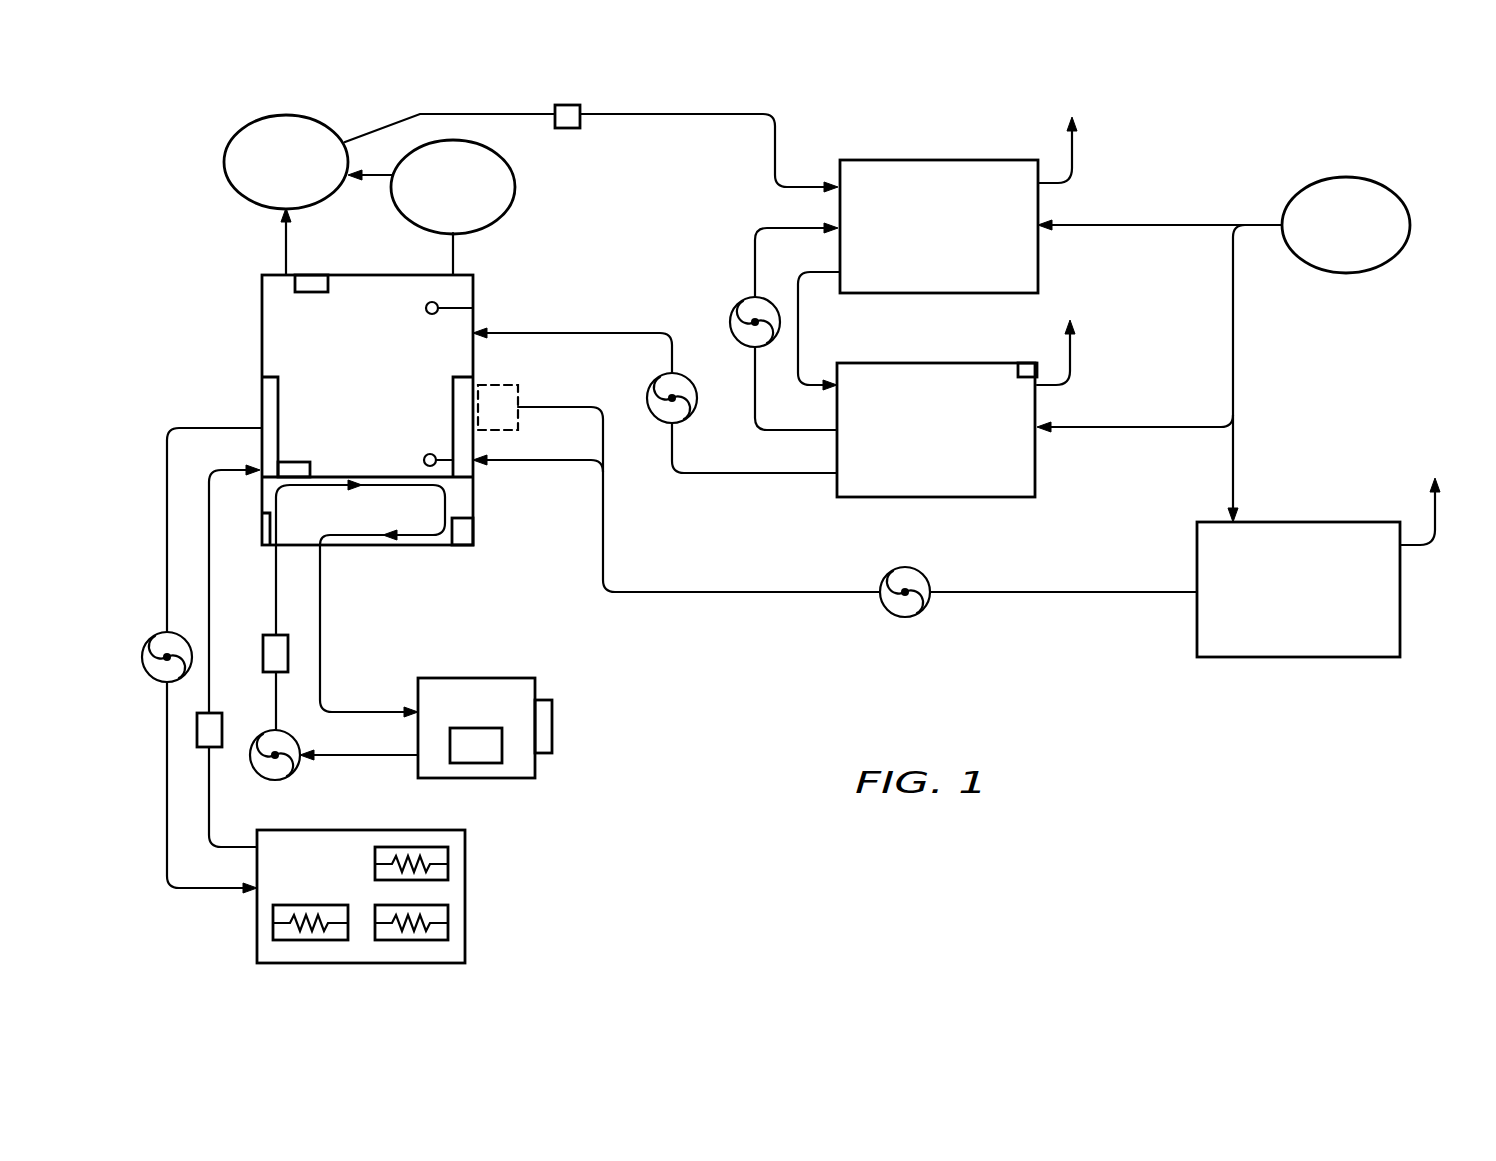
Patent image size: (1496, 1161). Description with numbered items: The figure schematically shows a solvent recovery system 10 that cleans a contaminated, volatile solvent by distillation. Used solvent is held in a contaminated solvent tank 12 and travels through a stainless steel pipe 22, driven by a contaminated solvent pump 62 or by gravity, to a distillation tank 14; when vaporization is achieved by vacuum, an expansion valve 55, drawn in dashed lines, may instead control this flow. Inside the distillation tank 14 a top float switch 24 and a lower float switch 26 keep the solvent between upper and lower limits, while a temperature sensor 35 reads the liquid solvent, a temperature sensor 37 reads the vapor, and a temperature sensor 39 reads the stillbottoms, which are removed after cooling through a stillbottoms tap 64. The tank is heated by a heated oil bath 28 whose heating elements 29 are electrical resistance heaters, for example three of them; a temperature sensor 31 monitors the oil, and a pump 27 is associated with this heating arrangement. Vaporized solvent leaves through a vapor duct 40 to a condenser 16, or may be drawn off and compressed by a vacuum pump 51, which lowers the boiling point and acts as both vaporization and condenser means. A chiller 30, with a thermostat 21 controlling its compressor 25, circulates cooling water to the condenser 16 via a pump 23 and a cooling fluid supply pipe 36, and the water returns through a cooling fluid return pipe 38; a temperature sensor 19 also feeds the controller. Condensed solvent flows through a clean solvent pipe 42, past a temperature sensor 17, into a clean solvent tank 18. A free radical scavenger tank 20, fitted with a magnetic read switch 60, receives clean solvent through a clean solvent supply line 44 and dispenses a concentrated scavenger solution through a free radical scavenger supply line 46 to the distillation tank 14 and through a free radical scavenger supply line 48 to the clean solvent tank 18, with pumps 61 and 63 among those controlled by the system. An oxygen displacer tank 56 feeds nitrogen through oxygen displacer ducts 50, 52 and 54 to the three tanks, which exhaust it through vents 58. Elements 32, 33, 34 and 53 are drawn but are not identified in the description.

The solvent recovery system 10 is at (1052, 684).
The contaminated solvent tank 12 is at (1313, 522).
The distillation tank 14 is at (333, 393).
The condenser 16 is at (295, 195).
The temperature sensor 17 is at (568, 130).
The clean solvent tank 18 is at (1040, 264).
The temperature sensor 19 is at (263, 637).
The free radical scavenger tank 20 is at (1037, 483).
The thermostat 21 is at (552, 733).
The stainless steel pipe 22 is at (1045, 590).
The pump 23 is at (267, 734).
The top float switch 24 is at (431, 316).
The compressor 25 is at (490, 763).
The lower float switch 26 is at (424, 460).
The pump 27 is at (175, 636).
The heated oil bath 28 is at (358, 830).
The heating elements 29 is at (448, 868).
The chiller 30 is at (515, 678).
The temperature sensor 31 is at (198, 750).
The conduit 32 is at (210, 793).
The baffles 33 is at (262, 397).
The conduit 34 is at (188, 890).
The temperature sensor 35 is at (300, 462).
The cooling fluid supply pipe 36 is at (276, 695).
The temperature sensor 37 is at (315, 275).
The cooling fluid return pipe 38 is at (320, 592).
The temperature sensor 39 is at (473, 525).
The vapor duct 40 is at (283, 248).
The clean solvent pipe 42 is at (688, 116).
The clean solvent supply line 44 is at (798, 346).
The free radical scavenger supply line 46 is at (743, 478).
The free radical scavenger supply line 48 is at (753, 383).
The oxygen displacer duct 50 is at (1233, 465).
The vacuum pump 51 is at (462, 222).
The oxygen displacer duct 52 is at (1165, 426).
The conduit 53 is at (452, 262).
The oxygen displacer duct 54 is at (1163, 222).
The expansion valve 55 is at (530, 393).
The oxygen displacer tank 56 is at (1300, 193).
The vents 58 is at (1075, 150).
The magnetic read switch 60 is at (1025, 363).
The pump 61 is at (688, 416).
The contaminated solvent pump 62 is at (925, 602).
The pump 63 is at (735, 308).
The stillbottoms tap 64 is at (262, 532).